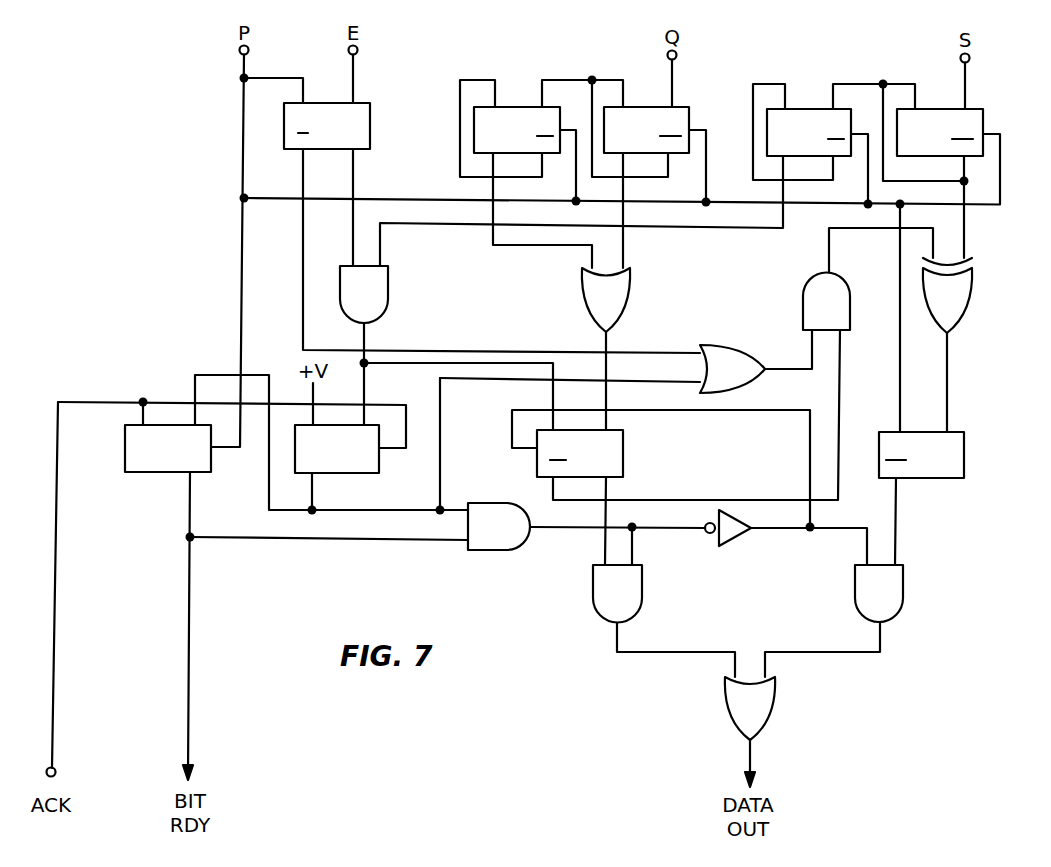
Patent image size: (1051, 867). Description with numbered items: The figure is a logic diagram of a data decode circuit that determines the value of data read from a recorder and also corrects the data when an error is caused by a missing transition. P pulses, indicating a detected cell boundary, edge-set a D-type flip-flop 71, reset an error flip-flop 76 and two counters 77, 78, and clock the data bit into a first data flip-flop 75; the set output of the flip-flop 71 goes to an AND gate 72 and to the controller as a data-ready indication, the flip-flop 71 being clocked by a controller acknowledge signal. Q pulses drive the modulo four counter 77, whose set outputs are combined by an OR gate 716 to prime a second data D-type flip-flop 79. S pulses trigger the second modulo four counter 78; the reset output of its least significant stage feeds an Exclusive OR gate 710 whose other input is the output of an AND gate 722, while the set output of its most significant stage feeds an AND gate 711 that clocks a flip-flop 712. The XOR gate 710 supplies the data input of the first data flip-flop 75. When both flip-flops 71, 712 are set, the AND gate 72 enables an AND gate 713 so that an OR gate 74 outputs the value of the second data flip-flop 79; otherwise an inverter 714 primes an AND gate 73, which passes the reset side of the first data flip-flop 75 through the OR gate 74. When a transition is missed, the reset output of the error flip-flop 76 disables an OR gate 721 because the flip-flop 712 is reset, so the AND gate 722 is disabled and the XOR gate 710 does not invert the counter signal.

The D-type flip-flop 71 is at (125, 466).
The AND gate 72 is at (497, 550).
The AND gate 73 is at (903, 615).
The OR gate 74 is at (776, 696).
The first data flip-flop 75 is at (964, 462).
The error flip-flop 76 is at (370, 128).
The modulo four counter 77 is at (574, 70).
The second modulo four counter 78 is at (877, 73).
The second data D-type flip-flop 79 is at (623, 455).
The Exclusive OR gate 710 is at (973, 292).
The AND gate 711 is at (388, 290).
The flip-flop 712 is at (379, 468).
The AND gate 713 is at (642, 615).
The inverter 714 is at (735, 541).
The OR gate 716 is at (631, 286).
The OR gate 721 is at (732, 347).
The AND gate 722 is at (803, 296).